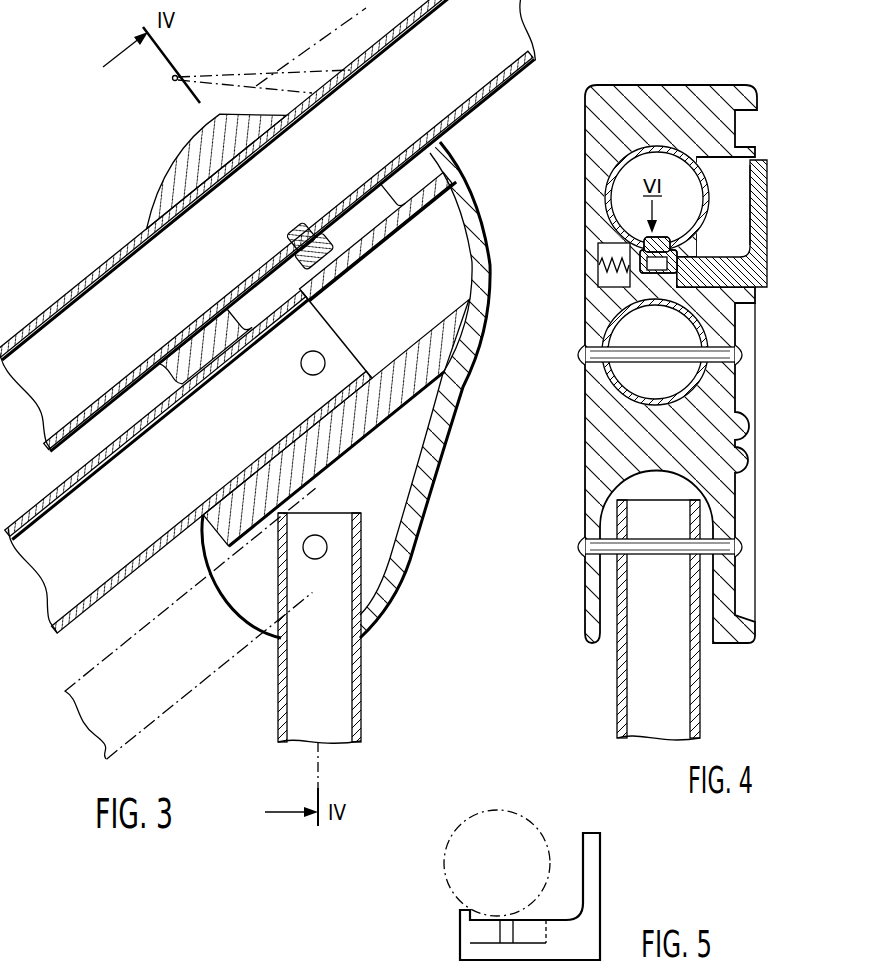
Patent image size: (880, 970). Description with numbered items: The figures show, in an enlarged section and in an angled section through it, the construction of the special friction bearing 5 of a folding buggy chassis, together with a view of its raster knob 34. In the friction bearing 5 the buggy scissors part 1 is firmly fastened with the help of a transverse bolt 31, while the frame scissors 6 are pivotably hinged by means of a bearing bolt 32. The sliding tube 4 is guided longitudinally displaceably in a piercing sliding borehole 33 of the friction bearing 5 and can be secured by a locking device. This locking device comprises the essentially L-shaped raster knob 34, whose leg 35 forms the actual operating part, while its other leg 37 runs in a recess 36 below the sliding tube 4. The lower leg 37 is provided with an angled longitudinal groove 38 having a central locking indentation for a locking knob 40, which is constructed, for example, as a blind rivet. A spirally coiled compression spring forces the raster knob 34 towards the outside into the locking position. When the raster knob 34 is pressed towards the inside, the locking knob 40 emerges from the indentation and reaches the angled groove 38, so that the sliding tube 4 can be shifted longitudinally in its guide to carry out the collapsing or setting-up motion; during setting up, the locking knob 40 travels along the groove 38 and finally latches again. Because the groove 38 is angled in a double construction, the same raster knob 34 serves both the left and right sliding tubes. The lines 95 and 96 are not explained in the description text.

In FIG. 3, the buggy scissors part 1 is at (40, 516).
In FIG. 4, the buggy scissors part 1 is at (705, 378).
In FIG. 3, the sliding tube 4 is at (52, 305).
In FIG. 4, the sliding tube 4 is at (604, 199).
In FIG. 3, the friction bearing 5 is at (458, 401).
In FIG. 4, the friction bearing 5 is at (675, 365).
In FIG. 3, the frame scissors 6 is at (360, 724).
In FIG. 4, the frame scissors 6 is at (620, 693).
In FIG. 3, the transverse bolt 31 is at (324, 361).
In FIG. 4, the transverse bolt 31 is at (617, 372).
In FIG. 3, the bearing bolt 32 is at (326, 545).
In FIG. 4, the bearing bolt 32 is at (632, 540).
In FIG. 3, the sliding borehole 33 is at (406, 157).
In FIG. 4, the raster knob 34 is at (766, 258).
In FIG. 5, the raster knob 34 is at (600, 877).
In FIG. 4, the leg 35 is at (760, 211).
In FIG. 4, the recess 36 is at (726, 185).
In FIG. 4, the leg 37 is at (753, 304).
In FIG. 4, the angled longitudinal groove 38 is at (632, 285).
In FIG. 3, the locking knob 40 is at (290, 246).
In FIG. 4, the locking knob 40 is at (677, 278).
In FIG. 3, the pivot axis line 95 is at (231, 77).
In FIG. 3, the lever line 96 is at (263, 108).